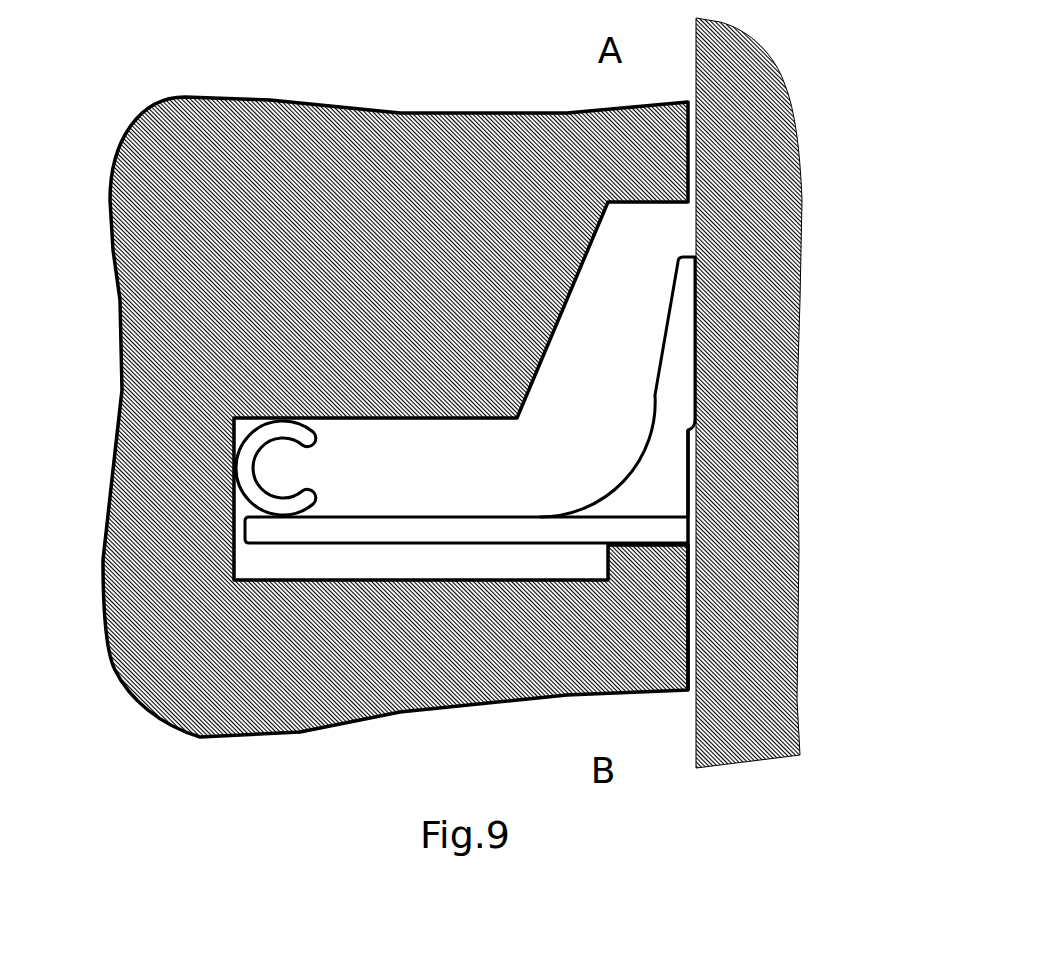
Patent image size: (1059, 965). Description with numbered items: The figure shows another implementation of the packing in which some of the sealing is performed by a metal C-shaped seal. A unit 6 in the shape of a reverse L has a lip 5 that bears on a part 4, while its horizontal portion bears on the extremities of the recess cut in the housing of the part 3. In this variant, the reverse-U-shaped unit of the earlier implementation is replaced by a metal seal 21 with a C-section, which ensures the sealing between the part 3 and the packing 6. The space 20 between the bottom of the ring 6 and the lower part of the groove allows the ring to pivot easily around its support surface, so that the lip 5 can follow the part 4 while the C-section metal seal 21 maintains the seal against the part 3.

The part 3 is at (420, 112).
The part 4 is at (805, 245).
The lip 5 is at (680, 340).
The unit 6 is at (688, 518).
The space 20 is at (428, 550).
The metal seal 21 is at (234, 451).